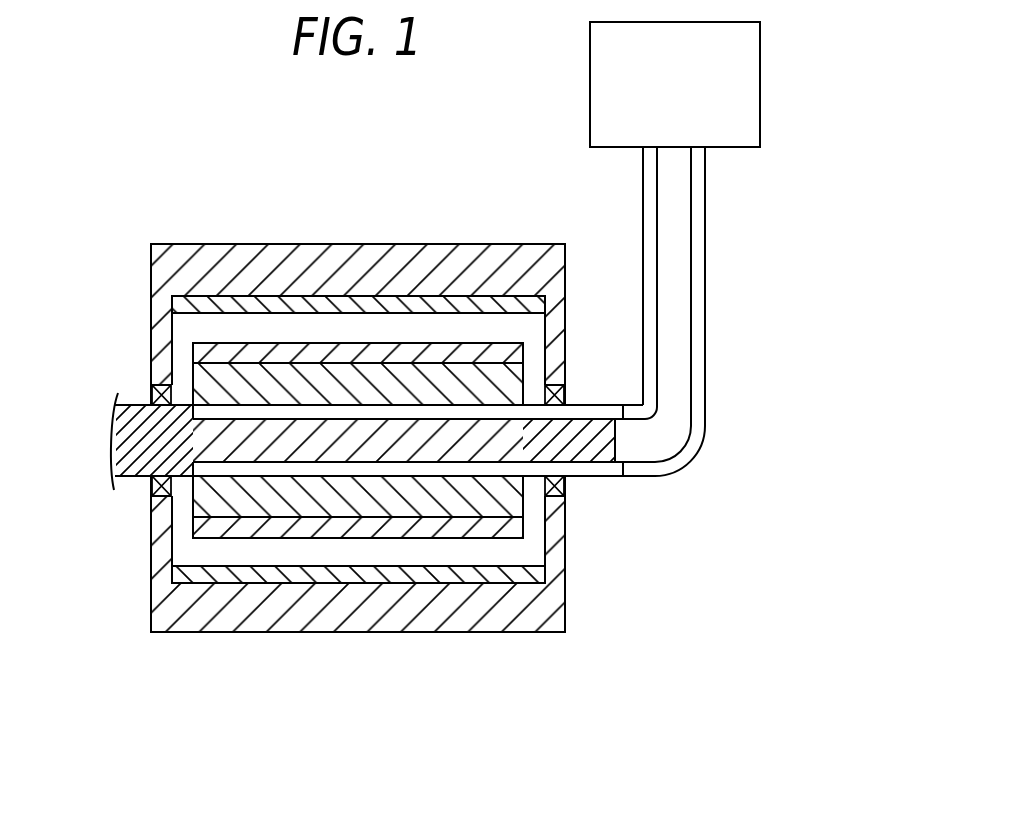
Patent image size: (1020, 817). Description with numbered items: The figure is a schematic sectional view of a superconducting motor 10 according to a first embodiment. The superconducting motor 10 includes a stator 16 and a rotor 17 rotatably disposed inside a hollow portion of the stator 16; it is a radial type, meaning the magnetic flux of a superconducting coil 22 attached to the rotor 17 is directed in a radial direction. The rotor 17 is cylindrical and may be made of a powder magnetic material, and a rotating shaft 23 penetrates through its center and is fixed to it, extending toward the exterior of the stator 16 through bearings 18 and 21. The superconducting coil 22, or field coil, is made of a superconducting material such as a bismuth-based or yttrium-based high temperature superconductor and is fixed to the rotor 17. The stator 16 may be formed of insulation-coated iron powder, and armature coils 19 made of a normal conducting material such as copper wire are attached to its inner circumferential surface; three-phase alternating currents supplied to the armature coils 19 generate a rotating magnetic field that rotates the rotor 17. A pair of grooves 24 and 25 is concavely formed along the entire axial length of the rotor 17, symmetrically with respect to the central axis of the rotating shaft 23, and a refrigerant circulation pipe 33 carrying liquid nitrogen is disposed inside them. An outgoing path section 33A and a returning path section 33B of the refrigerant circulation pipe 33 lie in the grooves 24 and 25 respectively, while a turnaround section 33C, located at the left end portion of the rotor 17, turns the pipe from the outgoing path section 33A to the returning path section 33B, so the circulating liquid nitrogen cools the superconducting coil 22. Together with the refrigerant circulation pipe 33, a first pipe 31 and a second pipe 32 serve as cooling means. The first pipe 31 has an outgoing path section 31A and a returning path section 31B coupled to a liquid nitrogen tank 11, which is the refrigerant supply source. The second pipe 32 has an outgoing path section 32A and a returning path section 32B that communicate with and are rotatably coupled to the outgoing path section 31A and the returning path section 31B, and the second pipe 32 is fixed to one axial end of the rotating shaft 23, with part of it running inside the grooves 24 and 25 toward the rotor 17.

The superconducting motor 10 is at (134, 286).
The liquid nitrogen tank 11 is at (760, 80).
The stator 16 is at (188, 617).
The rotor 17 is at (200, 507).
The bearing 18 is at (567, 483).
The armature coil 19 is at (197, 295).
The bearing 21 is at (150, 485).
The superconducting coil 22 is at (233, 345).
The rotating shaft 23 is at (482, 448).
The groove 24 is at (480, 438).
The groove 25 is at (313, 462).
The first pipe 31 is at (745, 286).
The outgoing path section 31A is at (658, 224).
The returning path section 31B is at (706, 287).
The second pipe 32 is at (725, 419).
The outgoing path section 32A is at (598, 413).
The returning path section 32B is at (610, 468).
The refrigerant circulation pipe 33 is at (358, 326).
The outgoing path section 33A is at (413, 412).
The returning path section 33B is at (375, 470).
The turnaround section 33C is at (205, 455).